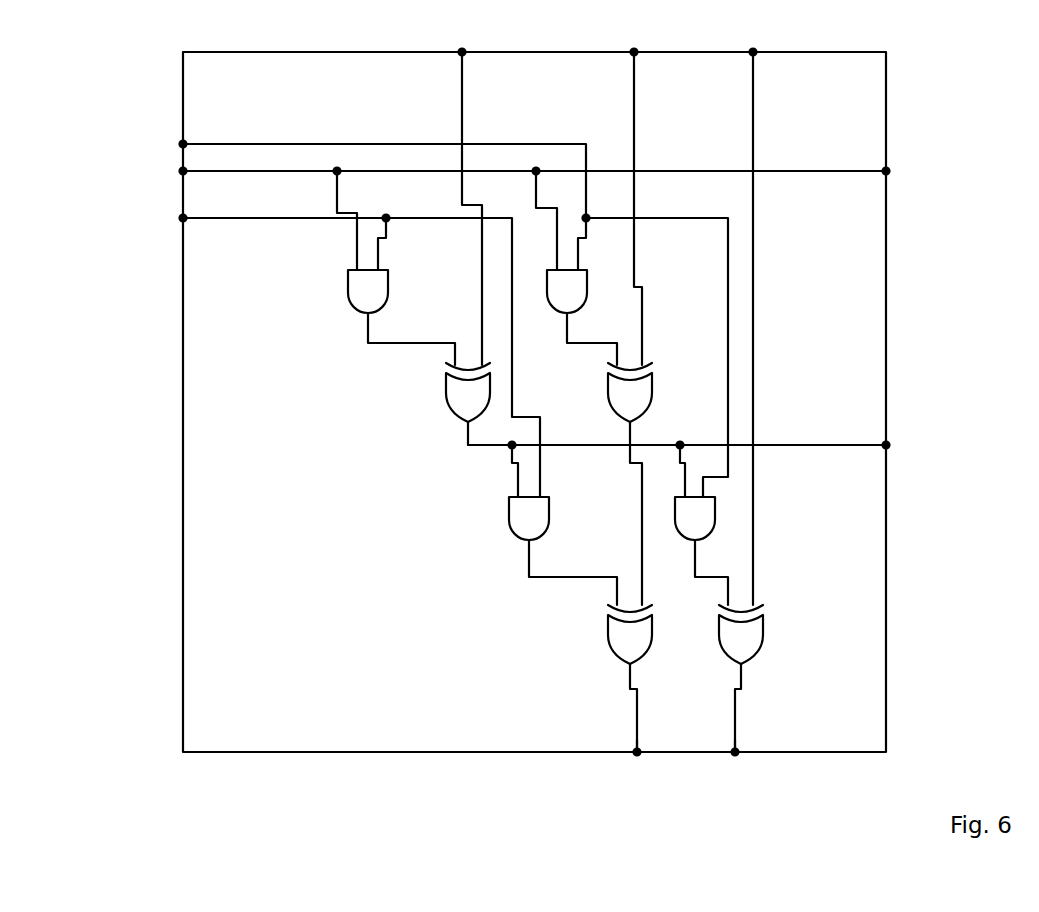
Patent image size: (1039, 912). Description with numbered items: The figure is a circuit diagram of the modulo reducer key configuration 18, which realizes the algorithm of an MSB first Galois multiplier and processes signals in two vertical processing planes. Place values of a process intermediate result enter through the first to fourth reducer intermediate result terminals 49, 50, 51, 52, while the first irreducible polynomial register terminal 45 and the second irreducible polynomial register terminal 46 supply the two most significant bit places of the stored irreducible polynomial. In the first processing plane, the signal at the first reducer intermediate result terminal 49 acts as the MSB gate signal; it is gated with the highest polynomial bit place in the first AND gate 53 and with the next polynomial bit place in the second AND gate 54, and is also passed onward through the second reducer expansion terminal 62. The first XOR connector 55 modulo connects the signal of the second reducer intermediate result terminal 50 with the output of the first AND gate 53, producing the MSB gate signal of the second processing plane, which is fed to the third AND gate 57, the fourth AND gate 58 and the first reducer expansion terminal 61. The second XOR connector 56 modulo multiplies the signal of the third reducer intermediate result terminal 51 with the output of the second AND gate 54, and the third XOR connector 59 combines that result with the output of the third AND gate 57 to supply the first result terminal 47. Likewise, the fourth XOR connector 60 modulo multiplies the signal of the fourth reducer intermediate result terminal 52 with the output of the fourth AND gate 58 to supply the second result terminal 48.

The modulo reducer key configuration 18 is at (534, 402).
The first irreducible polynomial register terminal 45 is at (343, 352).
The second irreducible polynomial register terminal 46 is at (437, 314).
The result terminal E(n-1) 47 is at (636, 761).
The result terminal E(n-2) 48 is at (734, 761).
The first reducer intermediate result terminal 49 is at (516, 214).
The second reducer intermediate result terminal 50 is at (465, 194).
The third reducer intermediate result terminal 51 is at (634, 194).
The fourth reducer intermediate result terminal 52 is at (752, 314).
The first AND gate 53 is at (401, 317).
The second AND gate 54 is at (582, 317).
The first XOR connector 55 is at (479, 404).
The second XOR connector 56 is at (641, 484).
The third AND gate 57 is at (563, 551).
The fourth AND gate 58 is at (709, 551).
The third XOR connector 59 is at (643, 678).
The fourth XOR connector 60 is at (755, 678).
The first reducer expansion terminal 61 is at (698, 465).
The second reducer expansion terminal 62 is at (899, 175).